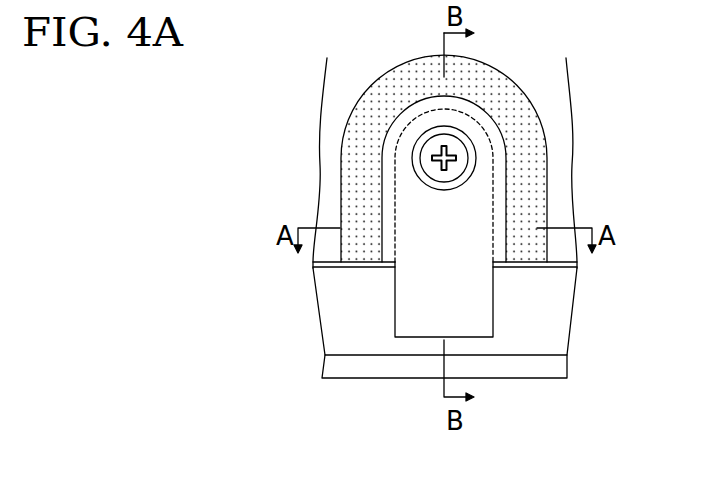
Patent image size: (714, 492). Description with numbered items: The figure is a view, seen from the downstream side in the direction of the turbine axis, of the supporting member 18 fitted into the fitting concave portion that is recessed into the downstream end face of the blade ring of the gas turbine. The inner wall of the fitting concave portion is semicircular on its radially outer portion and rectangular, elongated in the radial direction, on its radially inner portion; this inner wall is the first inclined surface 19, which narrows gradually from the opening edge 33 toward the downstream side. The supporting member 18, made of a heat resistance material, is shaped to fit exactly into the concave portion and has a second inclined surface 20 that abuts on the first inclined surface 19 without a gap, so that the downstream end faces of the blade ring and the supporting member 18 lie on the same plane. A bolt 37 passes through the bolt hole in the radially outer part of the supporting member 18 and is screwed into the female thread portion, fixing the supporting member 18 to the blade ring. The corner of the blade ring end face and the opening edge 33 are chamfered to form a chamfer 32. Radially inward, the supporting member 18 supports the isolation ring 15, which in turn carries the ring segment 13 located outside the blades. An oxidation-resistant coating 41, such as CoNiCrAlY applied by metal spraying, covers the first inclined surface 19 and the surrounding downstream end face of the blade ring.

The ring segment 13 is at (552, 367).
The isolation ring 15 is at (552, 332).
The supporting member 18 is at (473, 283).
The first inclined surface 19 is at (501, 163).
The second inclined surface 20 is at (500, 140).
The chamfer 32 is at (528, 267).
The opening edge 33 is at (392, 204).
The bolt 37 is at (411, 158).
The oxidation-resistant coating 41 is at (518, 110).